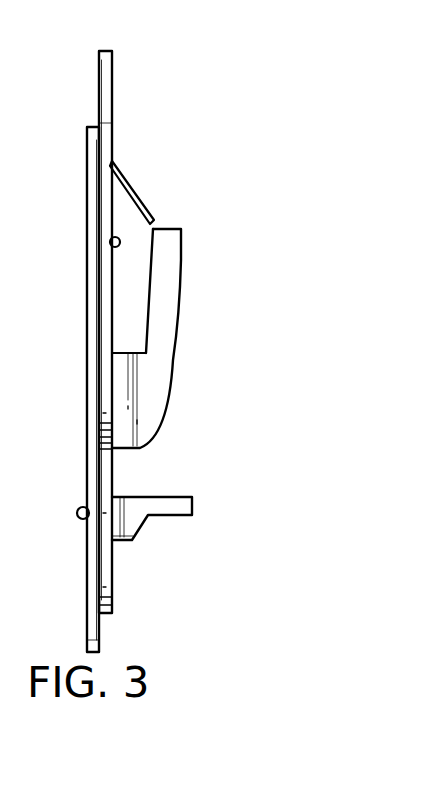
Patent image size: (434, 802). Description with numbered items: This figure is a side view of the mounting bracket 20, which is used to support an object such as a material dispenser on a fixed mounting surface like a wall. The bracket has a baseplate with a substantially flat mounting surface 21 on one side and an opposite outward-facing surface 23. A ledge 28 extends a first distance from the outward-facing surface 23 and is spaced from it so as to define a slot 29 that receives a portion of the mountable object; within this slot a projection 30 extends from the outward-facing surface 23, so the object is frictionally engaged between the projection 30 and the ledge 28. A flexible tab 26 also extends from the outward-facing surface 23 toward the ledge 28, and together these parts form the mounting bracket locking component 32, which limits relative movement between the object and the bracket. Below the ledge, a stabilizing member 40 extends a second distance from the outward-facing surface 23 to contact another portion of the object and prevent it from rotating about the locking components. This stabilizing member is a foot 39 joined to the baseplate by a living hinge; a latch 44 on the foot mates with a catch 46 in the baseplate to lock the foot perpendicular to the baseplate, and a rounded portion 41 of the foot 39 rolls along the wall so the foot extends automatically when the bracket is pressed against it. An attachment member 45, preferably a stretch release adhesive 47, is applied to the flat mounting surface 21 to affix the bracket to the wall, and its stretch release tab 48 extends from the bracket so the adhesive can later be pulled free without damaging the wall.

The mounting bracket 20 is at (197, 40).
The substantially flat mounting surface 21 is at (98, 72).
The outward-facing surface 23 is at (112, 125).
The flexible tab 26 is at (128, 180).
The ledge 28 is at (165, 297).
The slot 29 is at (132, 318).
The projection 30 is at (110, 242).
The mounting bracket locking component 32 is at (168, 219).
The foot 39 is at (163, 500).
The stabilizing member 40 is at (192, 505).
The rounded portion 41 is at (77, 513).
The latch 44 is at (135, 517).
The attachment member 45 is at (88, 382).
The catch 46 is at (132, 542).
The stretch release adhesive 47 is at (87, 540).
The stretch release tab 48 is at (92, 633).